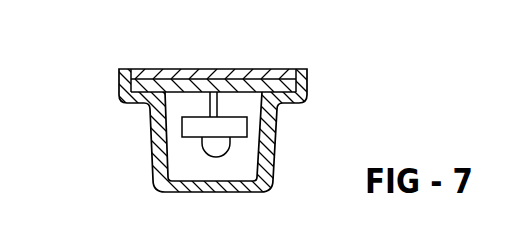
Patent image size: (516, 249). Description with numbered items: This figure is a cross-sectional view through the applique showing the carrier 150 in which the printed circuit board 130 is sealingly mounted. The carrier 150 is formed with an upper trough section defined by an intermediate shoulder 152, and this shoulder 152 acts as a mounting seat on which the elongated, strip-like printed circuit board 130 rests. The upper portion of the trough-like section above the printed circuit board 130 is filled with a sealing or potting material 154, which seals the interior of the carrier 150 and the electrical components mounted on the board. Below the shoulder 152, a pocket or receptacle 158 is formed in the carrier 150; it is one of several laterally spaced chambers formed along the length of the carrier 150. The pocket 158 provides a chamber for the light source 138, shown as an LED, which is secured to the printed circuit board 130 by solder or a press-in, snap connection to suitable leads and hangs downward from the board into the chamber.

The carrier 150 is at (355, 112).
The intermediate shoulder 152 is at (286, 80).
The sealing or potting material 154 is at (153, 73).
The printed circuit board 130 is at (176, 90).
The light source 138 is at (182, 128).
The pocket or receptacle 158 is at (153, 172).